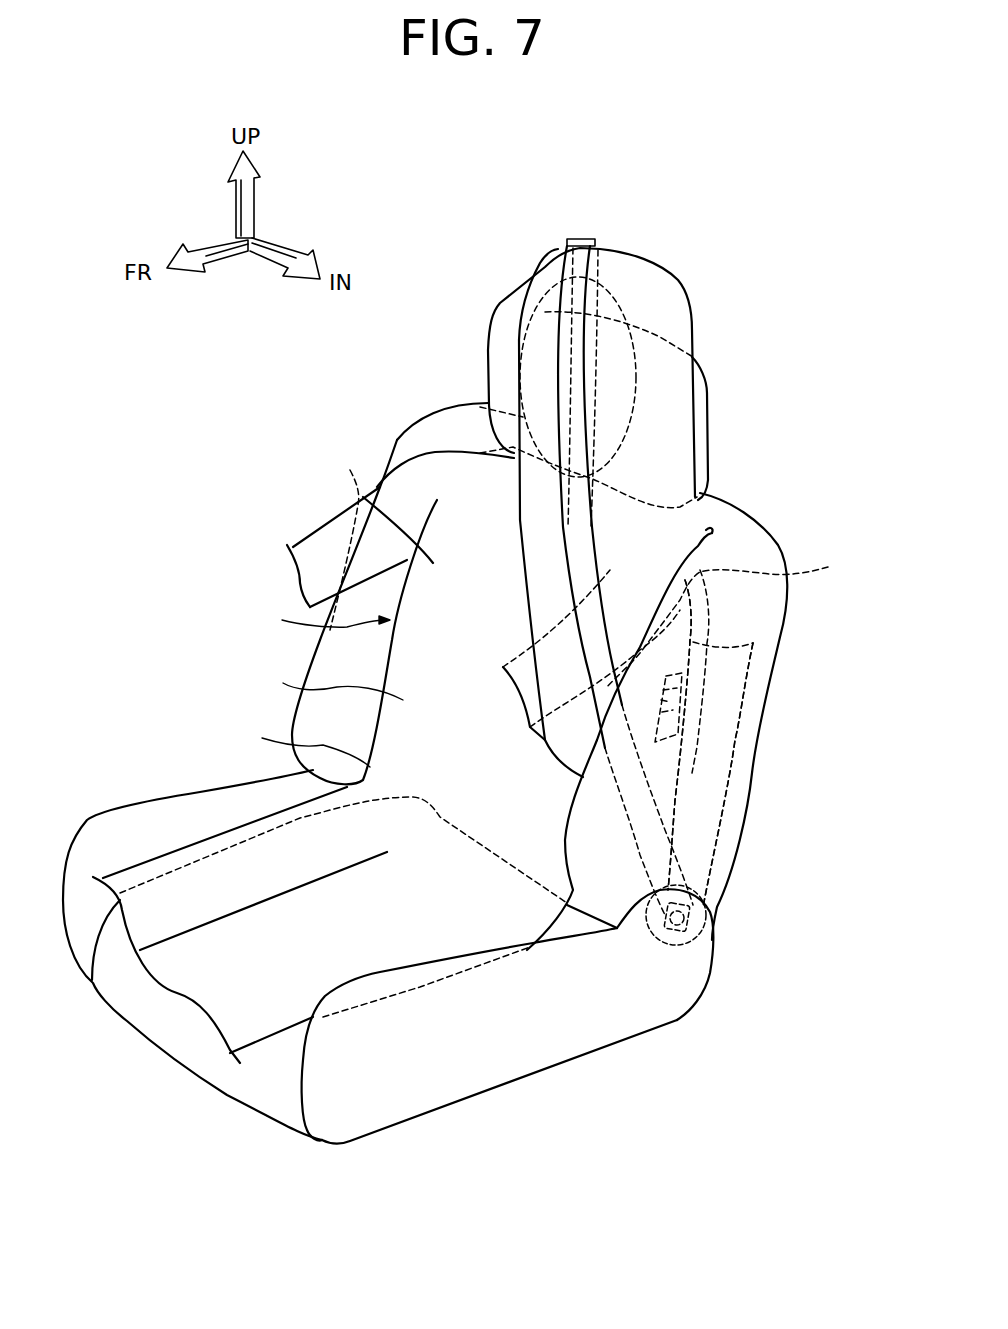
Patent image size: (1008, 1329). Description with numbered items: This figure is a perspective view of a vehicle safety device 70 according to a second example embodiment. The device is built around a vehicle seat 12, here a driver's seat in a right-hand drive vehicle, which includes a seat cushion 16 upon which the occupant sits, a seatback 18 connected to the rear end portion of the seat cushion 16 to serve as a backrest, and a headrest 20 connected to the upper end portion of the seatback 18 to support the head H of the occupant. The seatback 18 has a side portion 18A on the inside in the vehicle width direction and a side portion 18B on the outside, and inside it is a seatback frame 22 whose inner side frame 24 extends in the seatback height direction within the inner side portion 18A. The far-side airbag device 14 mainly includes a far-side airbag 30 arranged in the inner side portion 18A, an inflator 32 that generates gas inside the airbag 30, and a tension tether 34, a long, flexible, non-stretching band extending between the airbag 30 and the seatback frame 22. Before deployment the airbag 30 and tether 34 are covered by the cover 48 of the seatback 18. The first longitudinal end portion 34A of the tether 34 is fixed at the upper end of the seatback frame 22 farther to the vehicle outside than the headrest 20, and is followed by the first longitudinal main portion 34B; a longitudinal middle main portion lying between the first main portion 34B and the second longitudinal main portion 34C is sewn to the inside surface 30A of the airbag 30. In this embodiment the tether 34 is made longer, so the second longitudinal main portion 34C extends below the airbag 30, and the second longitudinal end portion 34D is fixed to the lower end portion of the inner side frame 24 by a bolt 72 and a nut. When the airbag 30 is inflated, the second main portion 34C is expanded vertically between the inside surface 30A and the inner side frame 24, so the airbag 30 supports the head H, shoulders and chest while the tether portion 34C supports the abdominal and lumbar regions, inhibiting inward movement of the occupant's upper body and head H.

The vehicle seat 12 is at (582, 1056).
The far-side airbag device 14 is at (712, 283).
The seat cushion 16 is at (467, 1100).
The seatback 18 is at (787, 617).
The side portion on the inside of the seatback 18A is at (567, 840).
The side portion on the outside of the seatback 18B is at (397, 440).
The headrest 20 is at (707, 423).
The seatback frame 22 is at (723, 783).
The inner side frame 24 is at (723, 783).
The far-side airbag 30 is at (697, 316).
The inside surface of the airbag 30A is at (575, 593).
The inflator 32 is at (660, 717).
The tension tether 34 is at (562, 562).
The first longitudinal end portion 34A is at (560, 520).
The first longitudinal main portion 34B is at (600, 420).
The second longitudinal main portion 34C is at (567, 812).
The second longitudinal end portion 34D is at (690, 897).
The cover 48 is at (440, 420).
The vehicle safety device 70 is at (234, 434).
The bolt 72 is at (653, 942).
The head H is at (493, 310).